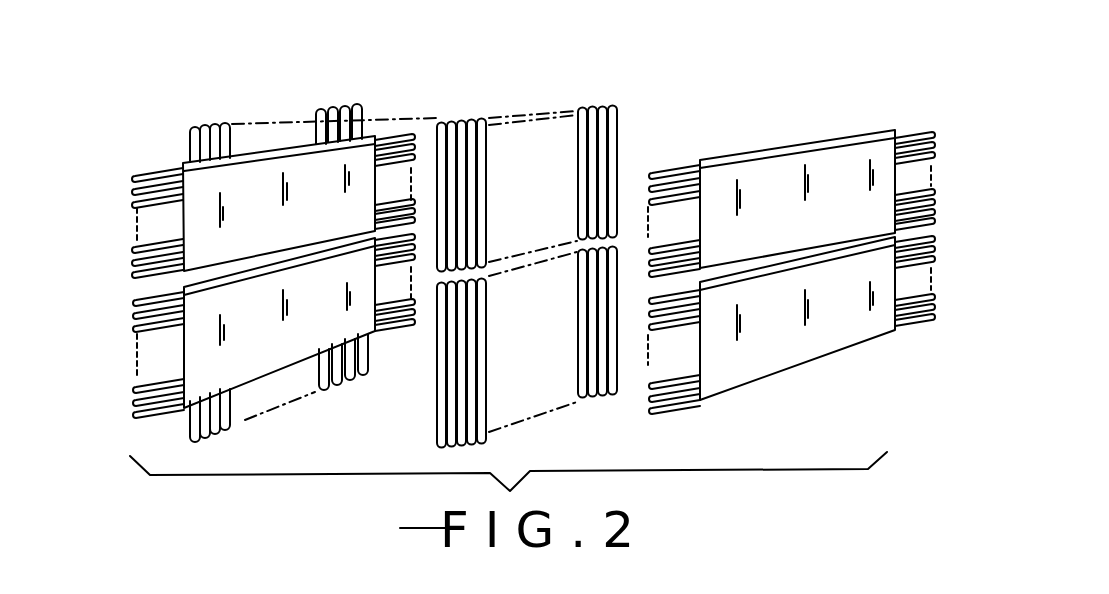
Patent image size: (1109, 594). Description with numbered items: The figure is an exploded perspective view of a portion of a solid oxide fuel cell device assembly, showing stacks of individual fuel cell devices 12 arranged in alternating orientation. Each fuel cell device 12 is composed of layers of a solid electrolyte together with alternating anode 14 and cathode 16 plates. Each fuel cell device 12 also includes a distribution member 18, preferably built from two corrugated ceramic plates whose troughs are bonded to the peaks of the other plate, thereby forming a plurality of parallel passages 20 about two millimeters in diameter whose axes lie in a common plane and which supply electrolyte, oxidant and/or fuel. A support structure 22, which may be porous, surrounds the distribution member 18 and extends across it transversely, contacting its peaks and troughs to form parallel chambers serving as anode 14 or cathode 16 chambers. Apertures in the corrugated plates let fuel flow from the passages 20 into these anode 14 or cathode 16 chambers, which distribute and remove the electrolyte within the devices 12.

The fuel cell device 12 is at (272, 170).
The anode 14 is at (143, 380).
The cathode 16 is at (140, 300).
The distribution member 18 is at (538, 148).
The passages 20 is at (136, 172).
The support structure 22 is at (183, 158).